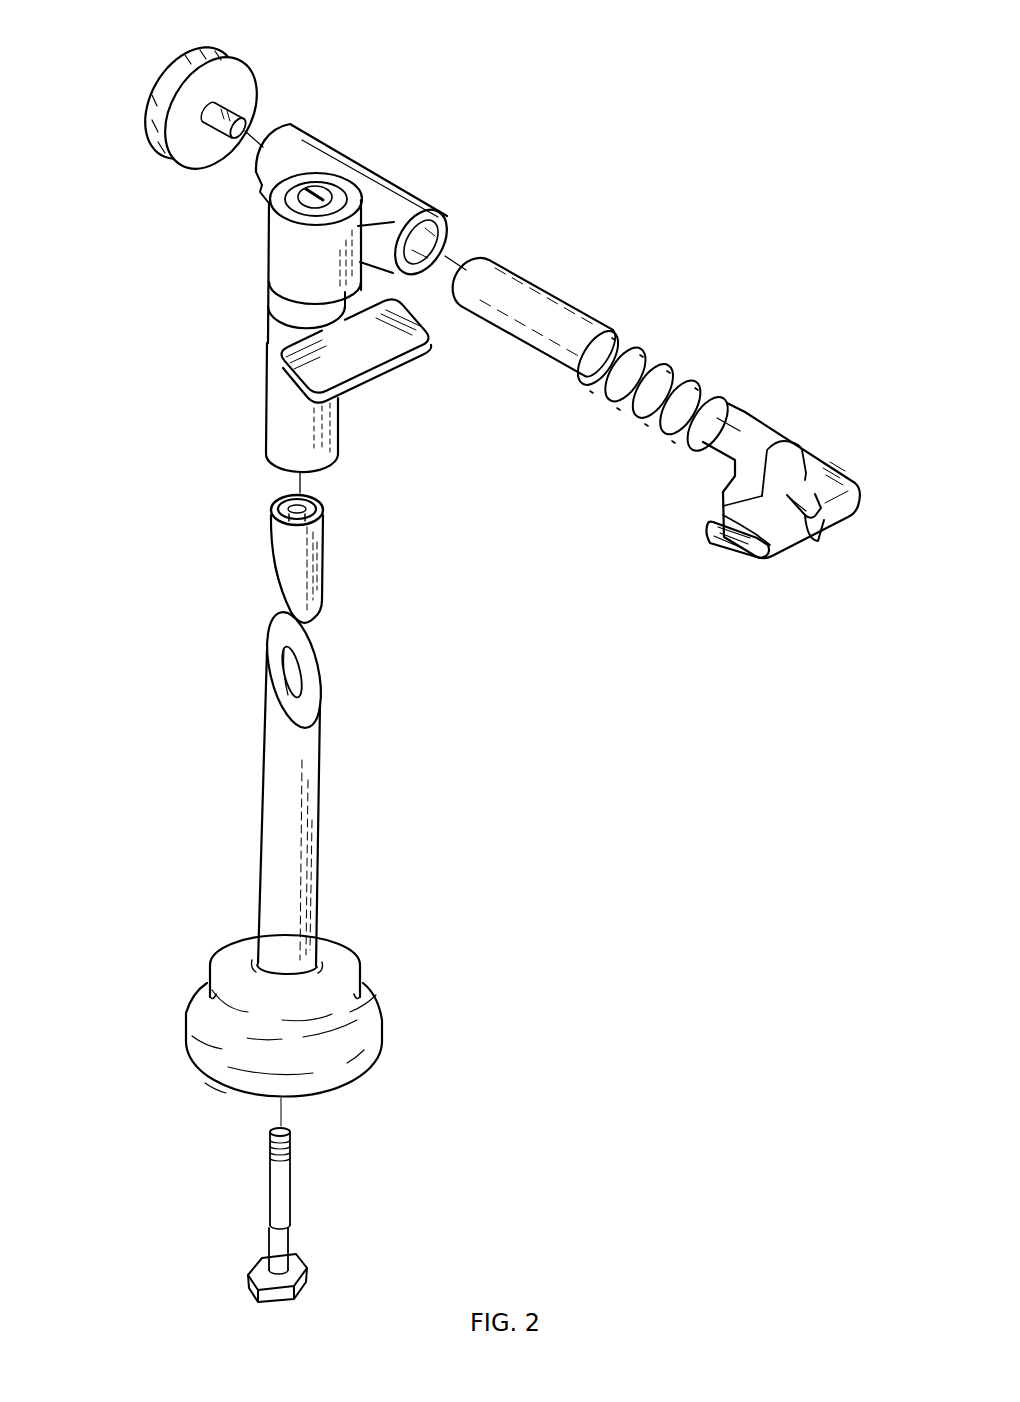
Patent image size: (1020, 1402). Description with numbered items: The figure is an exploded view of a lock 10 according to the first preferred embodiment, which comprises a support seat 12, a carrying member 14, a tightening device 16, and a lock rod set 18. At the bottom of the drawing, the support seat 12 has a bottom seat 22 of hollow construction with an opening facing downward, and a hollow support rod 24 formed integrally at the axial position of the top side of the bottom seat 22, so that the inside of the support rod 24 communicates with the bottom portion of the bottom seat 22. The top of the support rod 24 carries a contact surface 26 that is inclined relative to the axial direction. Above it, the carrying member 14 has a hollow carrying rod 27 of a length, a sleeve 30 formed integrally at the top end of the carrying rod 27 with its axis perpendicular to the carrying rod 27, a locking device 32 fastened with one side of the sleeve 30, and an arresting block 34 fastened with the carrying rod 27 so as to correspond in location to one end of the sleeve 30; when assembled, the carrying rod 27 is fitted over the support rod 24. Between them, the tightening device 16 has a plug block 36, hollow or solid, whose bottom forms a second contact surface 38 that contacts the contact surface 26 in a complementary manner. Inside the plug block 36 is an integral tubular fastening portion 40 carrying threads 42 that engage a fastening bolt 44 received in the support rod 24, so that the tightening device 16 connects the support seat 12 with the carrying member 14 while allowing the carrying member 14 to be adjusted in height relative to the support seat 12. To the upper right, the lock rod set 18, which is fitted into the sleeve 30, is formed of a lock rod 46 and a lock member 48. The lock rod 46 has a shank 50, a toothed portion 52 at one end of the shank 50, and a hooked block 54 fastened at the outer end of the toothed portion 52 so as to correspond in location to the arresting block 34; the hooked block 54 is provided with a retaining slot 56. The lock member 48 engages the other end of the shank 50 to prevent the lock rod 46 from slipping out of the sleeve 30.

The lock 10 is at (614, 170).
The support seat 12 is at (396, 742).
The carrying member 14 is at (188, 391).
The tightening device 16 is at (157, 1188).
The lock rod set 18 is at (325, 14).
The bottom seat 22 is at (363, 1020).
The support rod 24 is at (302, 809).
The contact surface 26 is at (313, 698).
The carrying rod 27 is at (270, 420).
The sleeve 30 is at (300, 147).
The locking device 32 is at (290, 249).
The arresting block 34 is at (338, 378).
The plug block 36 is at (315, 552).
The second contact surface 38 is at (276, 576).
The tubular fastening portion 40 is at (313, 500).
The threads 42 is at (272, 510).
The fastening bolt 44 is at (278, 1190).
The lock rod 46 is at (599, 303).
The lock member 48 is at (238, 83).
The shank 50 is at (528, 300).
The toothed portion 52 is at (662, 378).
The hooked block 54 is at (724, 543).
The retaining slot 56 is at (812, 540).